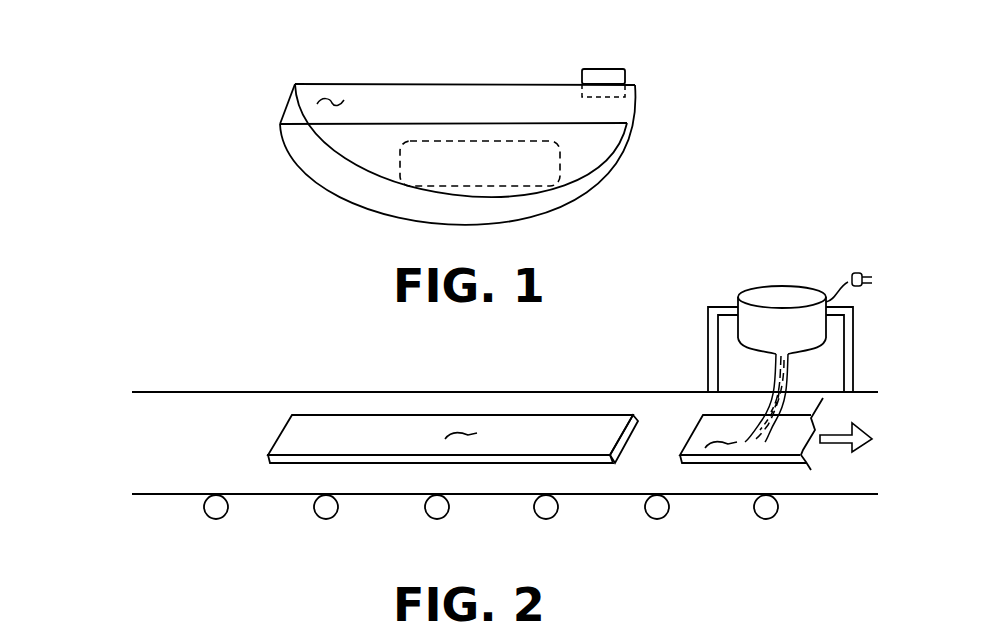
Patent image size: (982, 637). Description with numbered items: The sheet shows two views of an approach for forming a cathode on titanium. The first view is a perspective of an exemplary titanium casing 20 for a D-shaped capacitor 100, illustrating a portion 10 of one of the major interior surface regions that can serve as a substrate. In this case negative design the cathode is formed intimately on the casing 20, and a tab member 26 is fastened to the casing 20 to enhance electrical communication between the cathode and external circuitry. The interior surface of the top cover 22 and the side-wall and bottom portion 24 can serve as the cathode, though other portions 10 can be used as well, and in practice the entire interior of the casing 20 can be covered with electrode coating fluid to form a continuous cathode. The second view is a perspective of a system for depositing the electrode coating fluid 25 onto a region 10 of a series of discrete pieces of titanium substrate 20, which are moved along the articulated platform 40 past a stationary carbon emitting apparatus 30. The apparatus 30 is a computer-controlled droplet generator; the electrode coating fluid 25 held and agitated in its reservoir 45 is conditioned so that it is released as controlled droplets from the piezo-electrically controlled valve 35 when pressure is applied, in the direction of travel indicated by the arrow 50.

In FIG. 1, the D-shaped capacitor 100 is at (268, 95).
In FIG. 1, the portion of interior surface region 10 is at (475, 120).
In FIG. 2, the portion of interior surface region 10 is at (472, 437).
In FIG. 1, the titanium casing 20 is at (630, 126).
In FIG. 2, the titanium casing 20 is at (543, 414).
In FIG. 1, the top cover 22 is at (338, 100).
In FIG. 1, the side-wall and bottom portion 24 is at (355, 198).
In FIG. 1, the tab member 26 is at (602, 52).
In FIG. 2, the carbon emitting apparatus 30 is at (762, 272).
In FIG. 2, the reservoir 45 is at (794, 287).
In FIG. 2, the electrode coating fluid 25 is at (758, 382).
In FIG. 2, the piezo-electrically controlled valve 35 is at (803, 368).
In FIG. 2, the articulated platform 40 is at (379, 489).
In FIG. 2, the direction of travel 50 is at (843, 447).